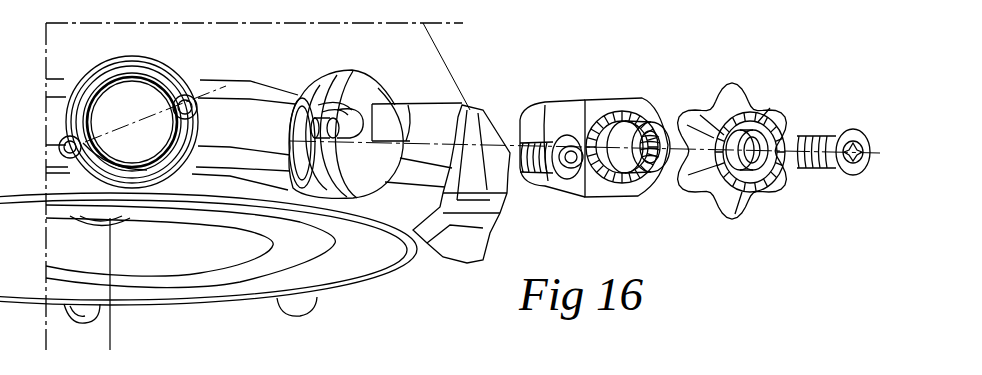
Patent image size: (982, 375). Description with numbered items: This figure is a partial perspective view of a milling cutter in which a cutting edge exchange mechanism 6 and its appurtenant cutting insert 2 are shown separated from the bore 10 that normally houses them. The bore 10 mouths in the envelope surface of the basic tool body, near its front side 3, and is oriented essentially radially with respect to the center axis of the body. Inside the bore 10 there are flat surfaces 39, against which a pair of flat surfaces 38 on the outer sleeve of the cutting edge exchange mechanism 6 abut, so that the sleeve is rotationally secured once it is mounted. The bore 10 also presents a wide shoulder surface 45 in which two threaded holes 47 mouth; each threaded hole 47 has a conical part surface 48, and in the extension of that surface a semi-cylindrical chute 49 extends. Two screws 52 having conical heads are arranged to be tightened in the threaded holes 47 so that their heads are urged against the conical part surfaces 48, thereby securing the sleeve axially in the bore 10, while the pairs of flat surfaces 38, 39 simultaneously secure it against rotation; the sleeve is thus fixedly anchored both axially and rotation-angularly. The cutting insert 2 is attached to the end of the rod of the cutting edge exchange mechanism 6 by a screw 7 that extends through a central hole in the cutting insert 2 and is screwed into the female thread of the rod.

The cutting insert 2 is at (763, 200).
The front side 3 is at (377, 273).
The cutting edge exchange mechanism 6 is at (596, 94).
The screw 7 is at (833, 130).
The bore 10 is at (103, 117).
The flat surface 38 is at (620, 103).
The flat surface 39 is at (133, 92).
The wide shoulder surface 45 is at (343, 90).
The threaded hole 47 is at (183, 107).
The conical part surface 48 is at (347, 128).
The chute 49 is at (386, 130).
The screw 52 is at (547, 166).